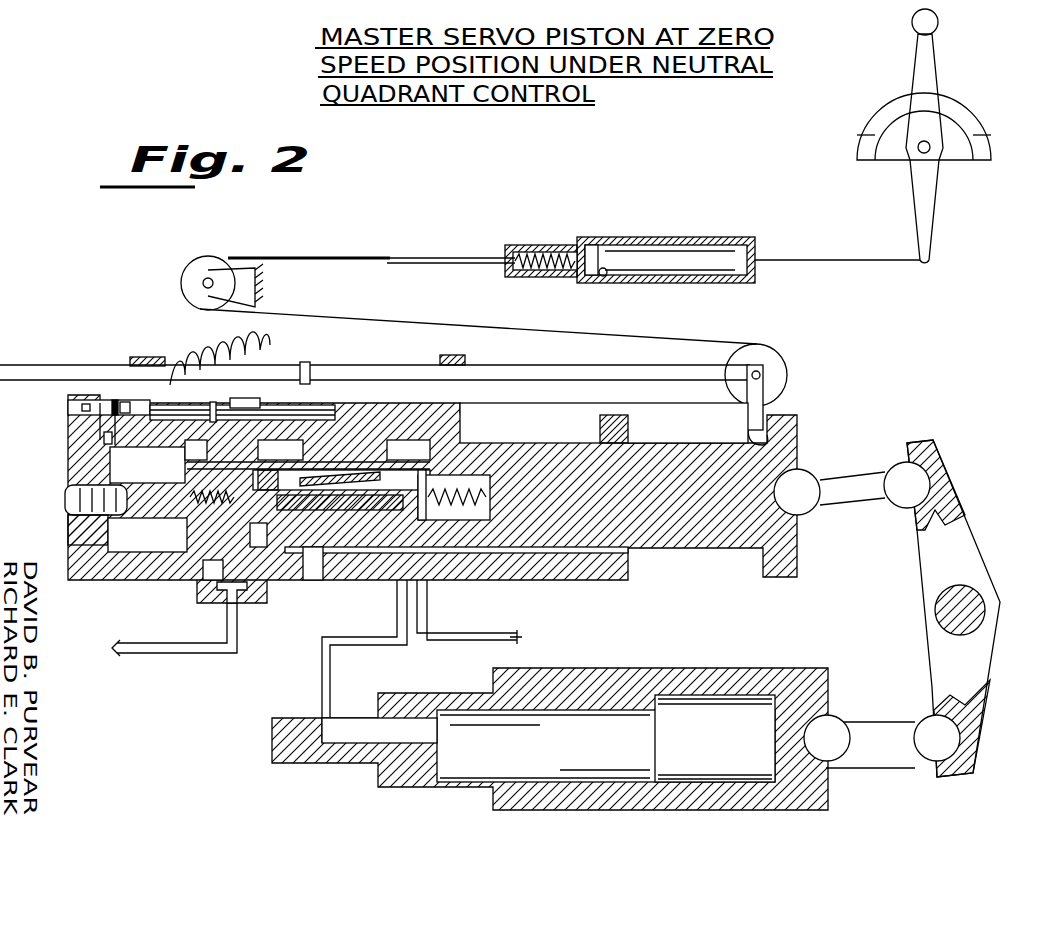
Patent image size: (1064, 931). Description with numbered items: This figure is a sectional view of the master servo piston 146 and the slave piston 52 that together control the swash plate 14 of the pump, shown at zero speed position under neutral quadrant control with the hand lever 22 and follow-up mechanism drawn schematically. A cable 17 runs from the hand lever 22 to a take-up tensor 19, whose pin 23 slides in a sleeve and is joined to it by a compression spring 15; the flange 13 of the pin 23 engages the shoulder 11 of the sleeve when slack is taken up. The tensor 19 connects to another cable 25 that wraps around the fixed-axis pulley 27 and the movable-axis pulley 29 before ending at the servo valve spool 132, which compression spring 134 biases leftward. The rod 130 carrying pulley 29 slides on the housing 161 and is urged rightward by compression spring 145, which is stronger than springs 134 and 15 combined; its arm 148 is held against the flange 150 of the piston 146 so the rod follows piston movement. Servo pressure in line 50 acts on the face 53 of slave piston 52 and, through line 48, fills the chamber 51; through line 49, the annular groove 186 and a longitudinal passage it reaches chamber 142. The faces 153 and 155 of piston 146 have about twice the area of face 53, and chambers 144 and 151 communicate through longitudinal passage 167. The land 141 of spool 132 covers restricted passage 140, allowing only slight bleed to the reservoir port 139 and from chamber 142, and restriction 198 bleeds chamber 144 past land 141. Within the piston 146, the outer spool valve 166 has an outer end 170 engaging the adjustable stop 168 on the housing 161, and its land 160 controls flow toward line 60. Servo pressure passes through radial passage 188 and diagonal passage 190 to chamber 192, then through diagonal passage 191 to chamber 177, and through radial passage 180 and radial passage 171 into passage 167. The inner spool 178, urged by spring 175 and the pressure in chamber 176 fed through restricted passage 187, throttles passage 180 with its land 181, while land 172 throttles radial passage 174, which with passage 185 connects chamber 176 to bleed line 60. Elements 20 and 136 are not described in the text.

The shoulder 11 is at (597, 281).
The flange 13 is at (590, 244).
The swash plate 14 is at (965, 540).
The compression spring 15 is at (527, 245).
The cable 17 is at (855, 262).
The take-up tensor 19 is at (735, 242).
The quadrant 20 is at (992, 140).
The hand lever 22 is at (930, 38).
The pin 23 is at (430, 262).
The cable 25 is at (320, 257).
The pulley 27 is at (185, 262).
The pulley 29 is at (785, 362).
The line 48 is at (370, 645).
The line 49 is at (425, 645).
The servo pressure line 50 is at (520, 640).
The chamber 51 is at (680, 700).
The slave piston 52 is at (805, 680).
The face 53 is at (760, 695).
The line 60 is at (165, 653).
The rod 130 is at (495, 372).
The servo valve spool 132 is at (215, 405).
The compression spring 134 is at (245, 400).
The passage 136 is at (68, 408).
The port 139 is at (108, 400).
The restricted passage 140 is at (110, 425).
The land 141 is at (140, 400).
The chamber 142 is at (118, 400).
The chamber 144 is at (80, 580).
The compression spring 145 is at (305, 362).
The master servo piston 146 is at (740, 548).
The arm 148 is at (770, 410).
The flange 150 is at (770, 445).
The chamber 151 is at (490, 478).
The face 153 is at (130, 585).
The face 155 is at (490, 520).
The land 160 is at (205, 603).
The housing 161 is at (630, 580).
The spool valve 166 is at (312, 580).
The longitudinal passage 167 is at (300, 470).
The adjustable stop 168 is at (90, 505).
The outer end 170 is at (80, 540).
The radial passage 171 is at (340, 420).
The land 172 is at (245, 603).
The radial passage 174 is at (262, 590).
The spring 175 is at (190, 488).
The chamber 176 is at (122, 547).
The chamber 177 is at (470, 580).
The inner spool 178 is at (350, 585).
The radial passage 180 is at (280, 580).
The land 181 is at (330, 430).
The passage 185 is at (185, 580).
The annular groove 186 is at (392, 585).
The restricted passage 187 is at (262, 406).
The radial passage 188 is at (475, 407).
The diagonal passage 190 is at (400, 430).
The diagonal passage 191 is at (340, 575).
The chamber 192 is at (302, 603).
The restriction 198 is at (105, 440).